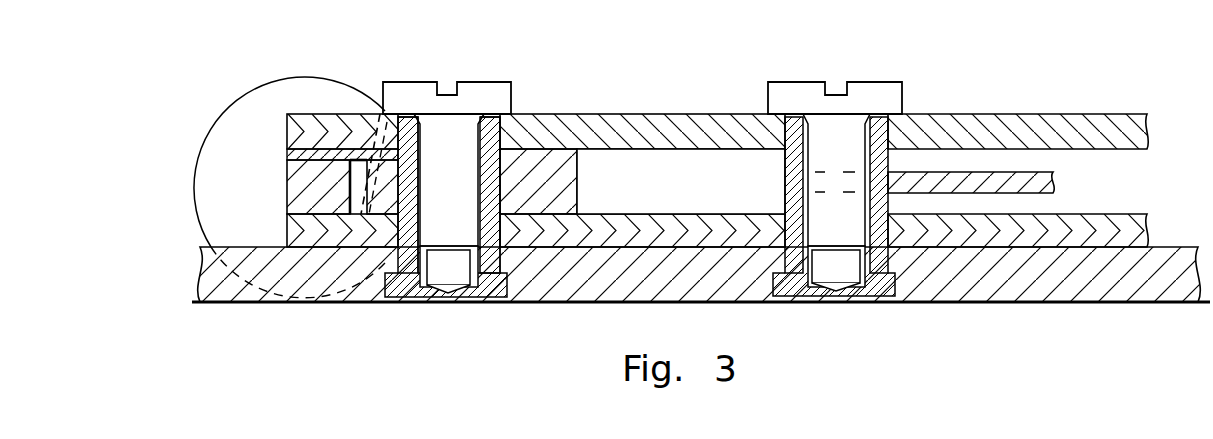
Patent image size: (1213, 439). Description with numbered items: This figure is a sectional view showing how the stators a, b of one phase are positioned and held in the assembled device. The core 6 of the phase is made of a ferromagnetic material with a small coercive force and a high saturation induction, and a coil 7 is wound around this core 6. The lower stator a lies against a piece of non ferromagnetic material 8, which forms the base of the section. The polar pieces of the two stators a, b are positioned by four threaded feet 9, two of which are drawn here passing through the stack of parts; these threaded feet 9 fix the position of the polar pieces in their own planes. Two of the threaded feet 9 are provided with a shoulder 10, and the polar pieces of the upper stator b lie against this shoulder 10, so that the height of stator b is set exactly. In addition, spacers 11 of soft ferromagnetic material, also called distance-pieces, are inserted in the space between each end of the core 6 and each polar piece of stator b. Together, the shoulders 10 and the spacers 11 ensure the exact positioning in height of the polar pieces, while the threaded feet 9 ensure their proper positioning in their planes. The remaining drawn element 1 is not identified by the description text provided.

The printed circuit board 1 is at (1043, 183).
The core 6 is at (300, 190).
The coil 7 is at (253, 94).
The piece of non ferromagnetic material 8 is at (217, 283).
The threaded feet 9 is at (483, 93).
The shoulder 10 is at (884, 147).
The spacers 11 is at (287, 158).
The stator a is at (1135, 232).
The stator b is at (1138, 128).